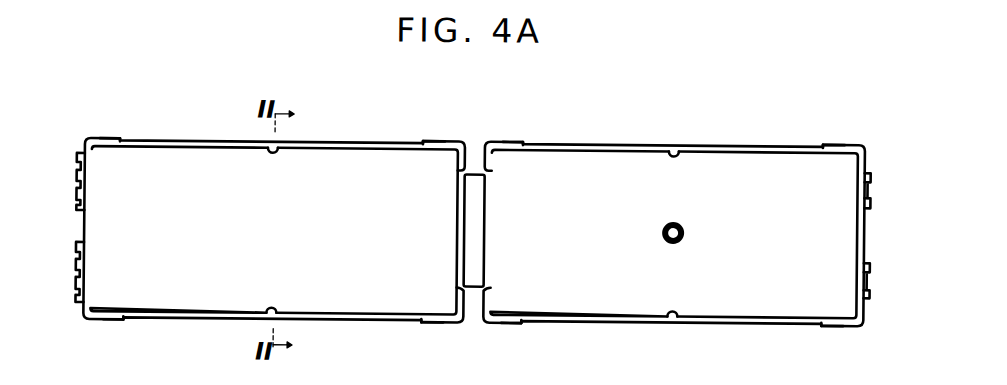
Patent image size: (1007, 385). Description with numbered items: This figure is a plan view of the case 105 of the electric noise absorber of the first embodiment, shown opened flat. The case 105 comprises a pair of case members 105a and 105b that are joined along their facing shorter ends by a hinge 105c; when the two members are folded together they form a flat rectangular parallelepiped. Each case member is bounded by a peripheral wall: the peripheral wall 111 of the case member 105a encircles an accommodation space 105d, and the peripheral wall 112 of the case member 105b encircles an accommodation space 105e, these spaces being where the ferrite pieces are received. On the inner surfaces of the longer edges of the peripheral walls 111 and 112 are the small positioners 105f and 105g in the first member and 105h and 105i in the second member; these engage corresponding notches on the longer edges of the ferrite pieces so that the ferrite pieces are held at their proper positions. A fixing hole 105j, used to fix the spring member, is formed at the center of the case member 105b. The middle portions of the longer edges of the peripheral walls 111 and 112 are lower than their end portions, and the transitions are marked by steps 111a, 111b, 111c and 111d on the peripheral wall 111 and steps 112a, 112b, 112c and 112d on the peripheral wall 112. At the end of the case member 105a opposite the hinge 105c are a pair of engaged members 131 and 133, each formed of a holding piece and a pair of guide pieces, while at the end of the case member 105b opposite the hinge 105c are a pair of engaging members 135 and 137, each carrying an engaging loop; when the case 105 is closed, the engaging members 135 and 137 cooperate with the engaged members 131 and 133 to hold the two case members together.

The case 105 is at (732, 78).
The case member 105a is at (375, 112).
The case member 105b is at (810, 110).
The hinge 105c is at (476, 173).
The accommodation space 105d is at (192, 287).
The accommodation space 105e is at (630, 297).
The positioner 105f is at (279, 152).
The positioner 105g is at (279, 305).
The positioner 105h is at (683, 152).
The positioner 105i is at (678, 309).
The fixing hole 105j is at (685, 228).
The peripheral wall 111 is at (96, 133).
The step 111a is at (122, 138).
The step 111b is at (125, 318).
The step 111c is at (419, 137).
The step 111d is at (423, 314).
The peripheral wall 112 is at (898, 136).
The step 112a is at (525, 139).
The step 112b is at (525, 314).
The step 112c is at (823, 137).
The step 112d is at (823, 313).
The engaged member 131 is at (78, 187).
The engaged member 133 is at (78, 272).
The engaging member 135 is at (871, 171).
The engaging member 137 is at (873, 261).